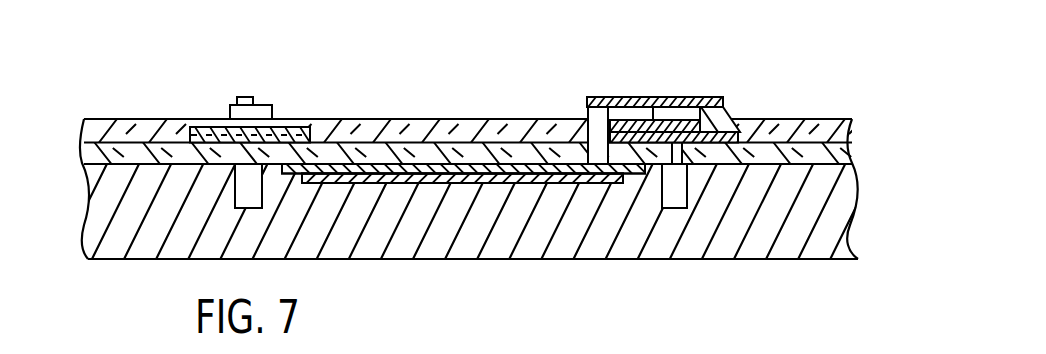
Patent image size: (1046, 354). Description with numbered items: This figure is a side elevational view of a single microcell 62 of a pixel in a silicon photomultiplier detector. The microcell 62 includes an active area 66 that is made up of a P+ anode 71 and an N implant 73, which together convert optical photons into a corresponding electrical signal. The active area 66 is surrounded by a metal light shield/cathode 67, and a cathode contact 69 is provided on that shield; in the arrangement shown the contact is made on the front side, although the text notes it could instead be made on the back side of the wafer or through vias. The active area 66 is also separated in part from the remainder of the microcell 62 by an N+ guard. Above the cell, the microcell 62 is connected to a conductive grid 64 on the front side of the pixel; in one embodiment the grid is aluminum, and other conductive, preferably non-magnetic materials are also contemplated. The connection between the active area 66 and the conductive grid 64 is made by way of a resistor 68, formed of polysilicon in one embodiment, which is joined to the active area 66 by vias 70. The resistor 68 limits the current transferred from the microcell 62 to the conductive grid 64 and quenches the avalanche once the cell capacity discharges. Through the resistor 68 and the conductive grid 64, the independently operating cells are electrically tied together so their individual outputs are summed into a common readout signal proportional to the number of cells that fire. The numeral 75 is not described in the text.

The microcell 62 is at (424, 95).
The conductive grid 64 is at (630, 97).
The active area 66 is at (467, 200).
The metal light shield/cathode 67 is at (198, 128).
The resistor 68 is at (265, 105).
The cathode contact 69 is at (742, 128).
The vias 70 is at (586, 113).
The P+ anode 71 is at (647, 167).
The N implant 73 is at (593, 181).
The nut 75 is at (688, 196).